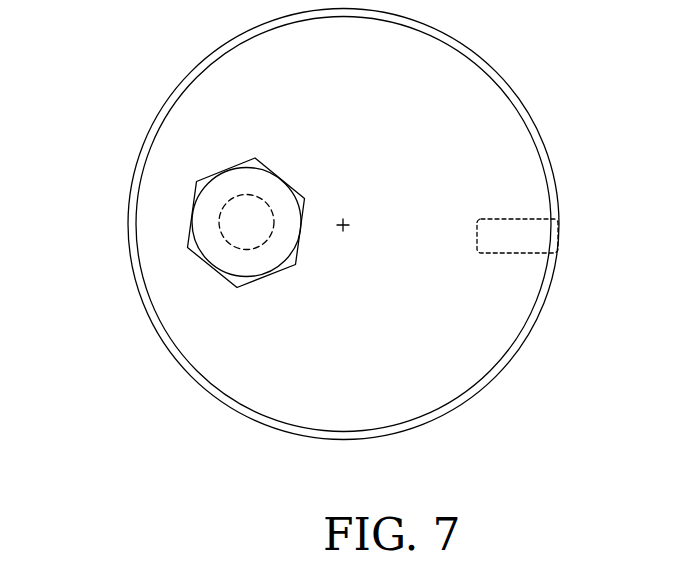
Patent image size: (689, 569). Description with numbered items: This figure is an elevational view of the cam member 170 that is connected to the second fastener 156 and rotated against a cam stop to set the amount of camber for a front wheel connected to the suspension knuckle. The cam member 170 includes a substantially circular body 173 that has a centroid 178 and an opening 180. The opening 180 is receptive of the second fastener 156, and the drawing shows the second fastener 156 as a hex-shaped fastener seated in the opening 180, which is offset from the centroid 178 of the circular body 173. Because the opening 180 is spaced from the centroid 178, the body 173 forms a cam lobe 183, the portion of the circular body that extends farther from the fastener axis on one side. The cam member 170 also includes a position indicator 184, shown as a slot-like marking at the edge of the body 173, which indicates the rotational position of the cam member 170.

The cam member 170 is at (137, 72).
The substantially circular body 173 is at (225, 347).
The second fastener 156 is at (188, 210).
The opening 180 is at (267, 198).
The centroid 178 is at (346, 229).
The cam lobe 183 is at (513, 188).
The position indicator 184 is at (522, 243).